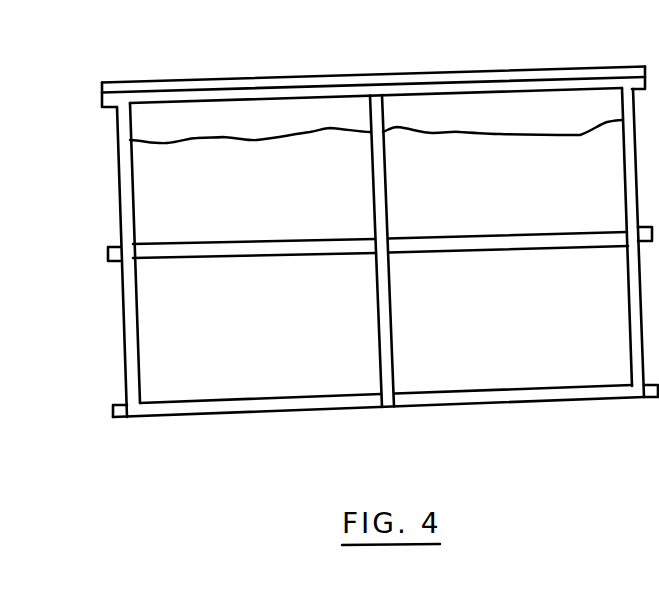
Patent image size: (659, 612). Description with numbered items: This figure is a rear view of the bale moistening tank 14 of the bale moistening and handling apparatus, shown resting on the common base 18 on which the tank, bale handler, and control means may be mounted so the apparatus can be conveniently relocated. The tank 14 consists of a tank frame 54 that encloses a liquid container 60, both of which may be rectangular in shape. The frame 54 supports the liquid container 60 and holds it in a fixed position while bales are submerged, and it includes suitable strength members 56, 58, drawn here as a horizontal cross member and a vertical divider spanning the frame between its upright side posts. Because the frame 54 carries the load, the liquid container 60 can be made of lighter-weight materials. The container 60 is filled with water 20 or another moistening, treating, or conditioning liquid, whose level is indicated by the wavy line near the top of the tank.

The bale moistening tank 14 is at (373, 59).
The common base 18 is at (497, 403).
The water 20 is at (225, 344).
The tank frame 54 is at (121, 228).
The strength member 56 is at (486, 234).
The strength member 58 is at (395, 347).
The liquid container 60 is at (225, 80).